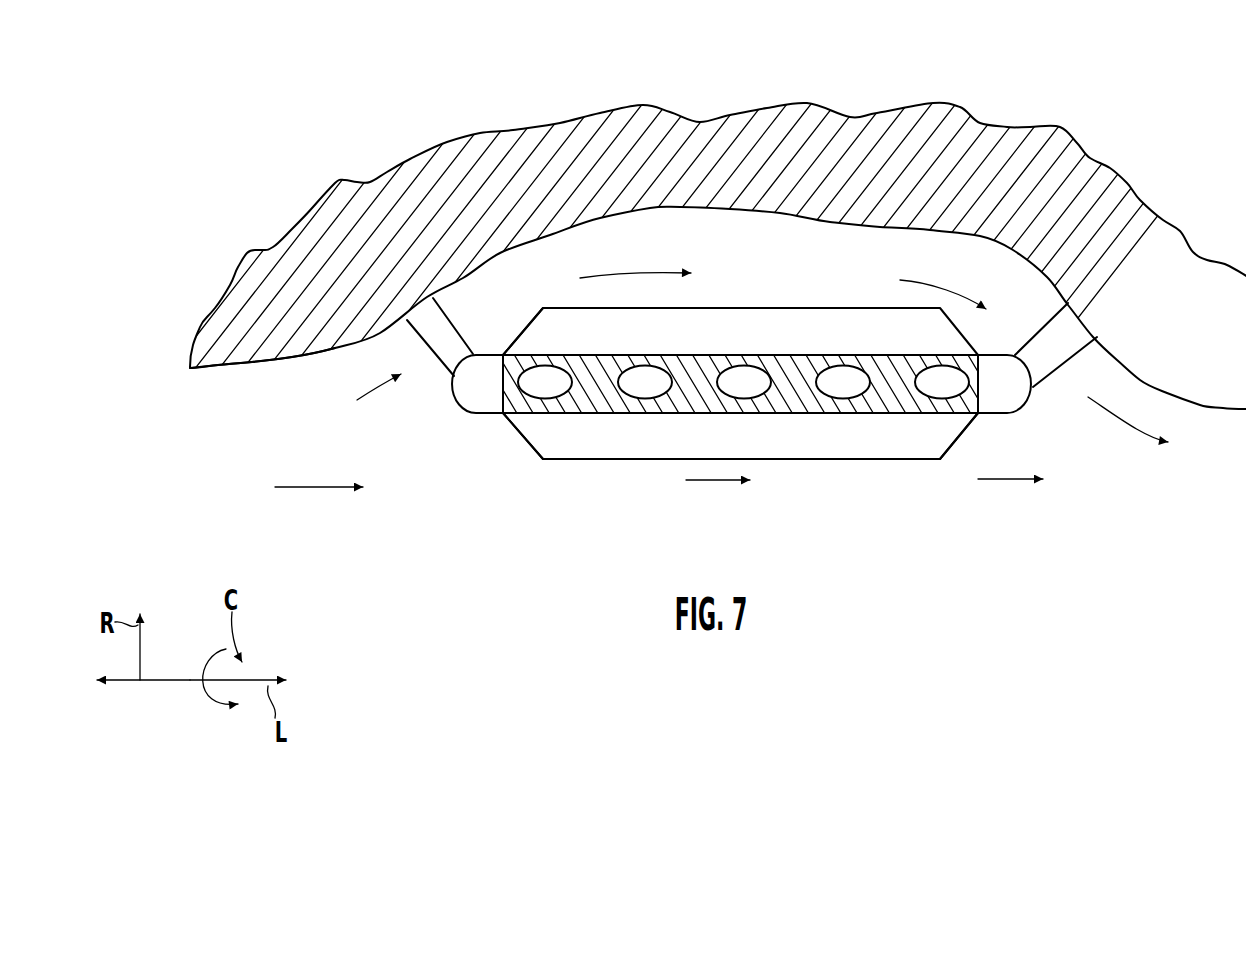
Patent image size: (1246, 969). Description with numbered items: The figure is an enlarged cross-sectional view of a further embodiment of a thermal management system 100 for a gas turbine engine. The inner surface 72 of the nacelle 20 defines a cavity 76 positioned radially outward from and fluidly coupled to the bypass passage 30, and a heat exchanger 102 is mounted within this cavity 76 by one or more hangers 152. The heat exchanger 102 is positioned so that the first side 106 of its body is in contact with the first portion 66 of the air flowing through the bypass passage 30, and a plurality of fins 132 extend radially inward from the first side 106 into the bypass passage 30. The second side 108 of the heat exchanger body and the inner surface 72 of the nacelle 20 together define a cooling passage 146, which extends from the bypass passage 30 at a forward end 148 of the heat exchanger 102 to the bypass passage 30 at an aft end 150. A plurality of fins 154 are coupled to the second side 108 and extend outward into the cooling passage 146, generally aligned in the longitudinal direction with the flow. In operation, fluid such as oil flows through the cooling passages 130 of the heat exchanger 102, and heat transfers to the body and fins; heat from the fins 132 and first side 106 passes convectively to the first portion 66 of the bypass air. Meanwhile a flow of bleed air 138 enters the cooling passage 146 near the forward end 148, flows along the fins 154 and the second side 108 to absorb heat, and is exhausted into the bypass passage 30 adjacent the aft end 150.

The thermal management system 100 is at (270, 110).
The nacelle 20 is at (292, 369).
The inner surface of the nacelle 72 is at (216, 368).
The cavity 76 is at (755, 252).
The cooling passage 146 is at (838, 261).
The bleed air 138 is at (372, 401).
The first portion of the air 66 is at (312, 488).
The bypass passage 30 is at (556, 541).
The heat exchanger 102 is at (497, 456).
The first side of the heat exchanger body 106 is at (618, 414).
The second side of the heat exchanger body 108 is at (550, 355).
The cooling passages 130 is at (829, 374).
The fins 132 is at (858, 460).
The forward end of the heat exchanger 148 is at (470, 432).
The aft end of the heat exchanger 150 is at (987, 423).
The hangers 152 is at (438, 372).
The fins 154 is at (524, 333).